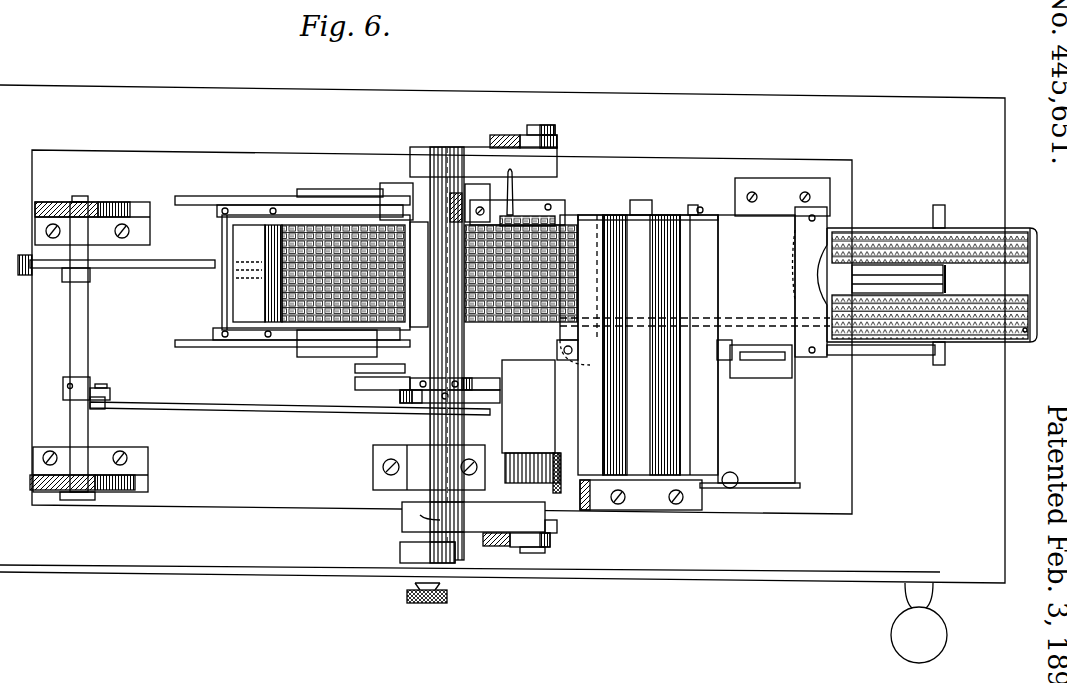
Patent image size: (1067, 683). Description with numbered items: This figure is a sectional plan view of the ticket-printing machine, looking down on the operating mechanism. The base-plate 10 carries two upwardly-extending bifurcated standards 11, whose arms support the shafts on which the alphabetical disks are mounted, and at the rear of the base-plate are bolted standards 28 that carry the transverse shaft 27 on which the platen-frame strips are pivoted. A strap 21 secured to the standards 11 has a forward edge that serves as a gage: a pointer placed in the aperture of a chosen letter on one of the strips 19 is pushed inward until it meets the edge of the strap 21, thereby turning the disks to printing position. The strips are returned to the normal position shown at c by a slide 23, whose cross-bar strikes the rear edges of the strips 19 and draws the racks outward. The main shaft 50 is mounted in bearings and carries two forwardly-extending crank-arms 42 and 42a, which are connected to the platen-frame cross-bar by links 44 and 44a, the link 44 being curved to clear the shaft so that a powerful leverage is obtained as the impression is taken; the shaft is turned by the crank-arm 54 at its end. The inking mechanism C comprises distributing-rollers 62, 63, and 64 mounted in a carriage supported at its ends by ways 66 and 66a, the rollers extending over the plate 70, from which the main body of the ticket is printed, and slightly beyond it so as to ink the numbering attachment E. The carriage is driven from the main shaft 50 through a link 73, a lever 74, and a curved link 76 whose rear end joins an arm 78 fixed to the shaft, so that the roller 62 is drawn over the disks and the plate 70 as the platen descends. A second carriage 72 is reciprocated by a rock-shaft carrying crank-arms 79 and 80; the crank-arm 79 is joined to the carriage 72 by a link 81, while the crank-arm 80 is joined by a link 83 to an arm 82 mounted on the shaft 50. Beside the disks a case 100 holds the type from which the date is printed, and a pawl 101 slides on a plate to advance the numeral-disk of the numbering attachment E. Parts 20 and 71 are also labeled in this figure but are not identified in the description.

The base-plate 10 is at (442, 332).
The bifurcated standards 11 is at (357, 199).
The strips 19 is at (1027, 236).
The paper table plate 20 is at (1030, 292).
The strap 21 is at (820, 235).
The slide 23 is at (946, 224).
The transverse shaft 27 is at (80, 346).
The standards 28 is at (108, 205).
The crank-arm 42 is at (503, 525).
The crank-arm 42a is at (478, 145).
The link 44 is at (515, 548).
The link 44a is at (508, 136).
The main shaft 50 is at (420, 433).
The crank-arm 54 is at (628, 568).
The distributing-roller 62 is at (591, 345).
The distributing-roller 63 is at (641, 345).
The distributing-roller 64 is at (672, 437).
The ways 66 is at (774, 330).
The ways 66a is at (750, 469).
The plate 70 is at (539, 406).
The type plate 71 is at (257, 273).
The carriage 72 is at (222, 302).
The link 73 is at (780, 363).
The lever 74 is at (727, 360).
The curved link 76 is at (372, 373).
The arm 78 is at (372, 389).
The crank-arm 79 is at (58, 276).
The crank-arm 80 is at (93, 390).
The link 81 is at (122, 278).
The arm 82 is at (450, 398).
The link 83 is at (251, 409).
The case 100 is at (525, 212).
The pawl 101 is at (578, 488).
The inking mechanism C is at (648, 248).
The normal strip position c is at (1027, 343).
The numbering attachment E is at (540, 485).